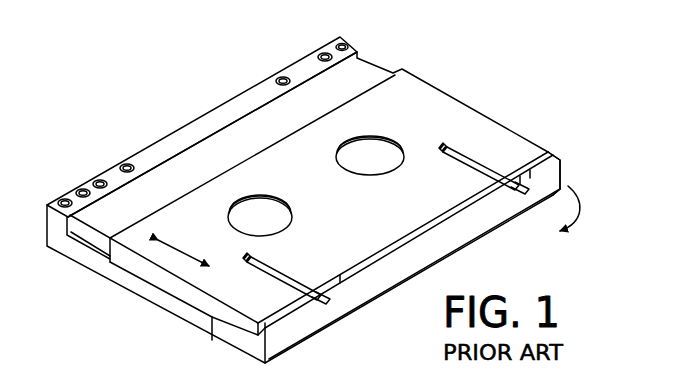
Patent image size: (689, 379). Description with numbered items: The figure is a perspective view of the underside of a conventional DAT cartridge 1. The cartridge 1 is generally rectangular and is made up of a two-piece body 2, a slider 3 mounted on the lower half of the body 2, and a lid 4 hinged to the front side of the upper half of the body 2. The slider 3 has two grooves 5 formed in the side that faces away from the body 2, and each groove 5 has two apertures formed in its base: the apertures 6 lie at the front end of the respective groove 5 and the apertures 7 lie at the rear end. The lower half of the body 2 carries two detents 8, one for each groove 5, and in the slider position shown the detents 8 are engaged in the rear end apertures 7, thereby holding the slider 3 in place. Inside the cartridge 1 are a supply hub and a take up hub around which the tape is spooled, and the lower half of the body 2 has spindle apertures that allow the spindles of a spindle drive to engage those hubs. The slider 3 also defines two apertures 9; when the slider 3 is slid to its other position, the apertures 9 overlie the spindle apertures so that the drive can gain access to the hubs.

The DAT cartridge 1 is at (459, 84).
The two-piece body 2 is at (158, 300).
The slider 3 is at (410, 83).
The lid 4 is at (560, 169).
The grooves 5 is at (290, 272).
The front end apertures 6 is at (510, 182).
The rear end apertures 7 is at (455, 142).
The detents 8 is at (246, 268).
The spindle access apertures 9 is at (372, 150).